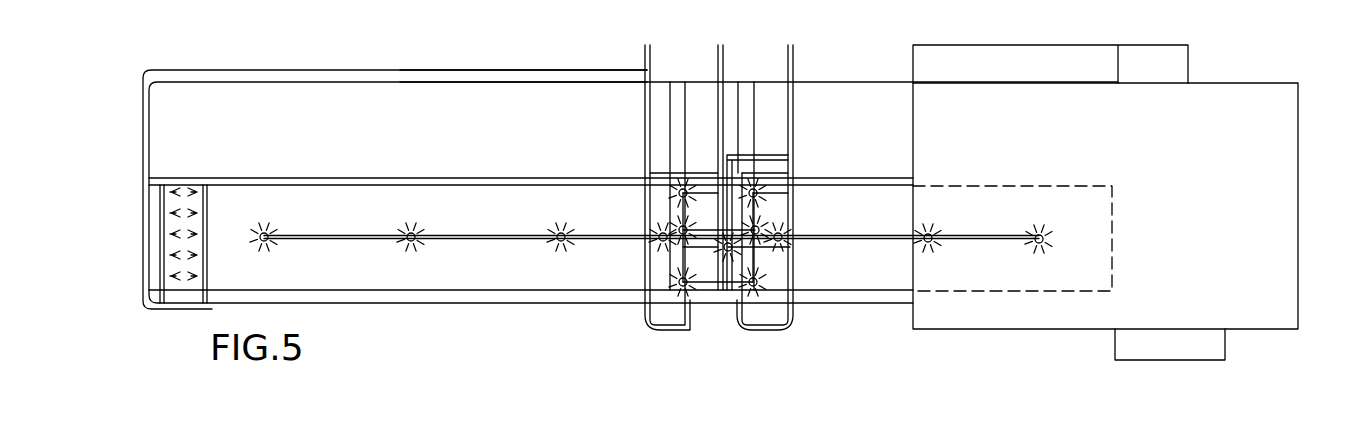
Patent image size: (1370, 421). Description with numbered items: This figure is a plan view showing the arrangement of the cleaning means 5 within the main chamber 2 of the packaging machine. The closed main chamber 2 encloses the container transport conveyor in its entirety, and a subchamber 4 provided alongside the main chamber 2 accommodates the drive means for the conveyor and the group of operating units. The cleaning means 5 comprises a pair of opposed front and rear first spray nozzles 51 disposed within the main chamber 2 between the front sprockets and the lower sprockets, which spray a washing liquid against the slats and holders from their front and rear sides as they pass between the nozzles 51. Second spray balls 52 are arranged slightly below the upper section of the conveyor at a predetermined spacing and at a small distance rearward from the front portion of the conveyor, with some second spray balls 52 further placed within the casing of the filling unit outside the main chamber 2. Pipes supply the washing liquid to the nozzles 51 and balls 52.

The main chamber 2 is at (148, 222).
The subchamber 4 is at (148, 118).
The cleaning means 5 is at (793, 167).
The first spray nozzles 51 is at (160, 263).
The second spray balls 52 is at (412, 243).